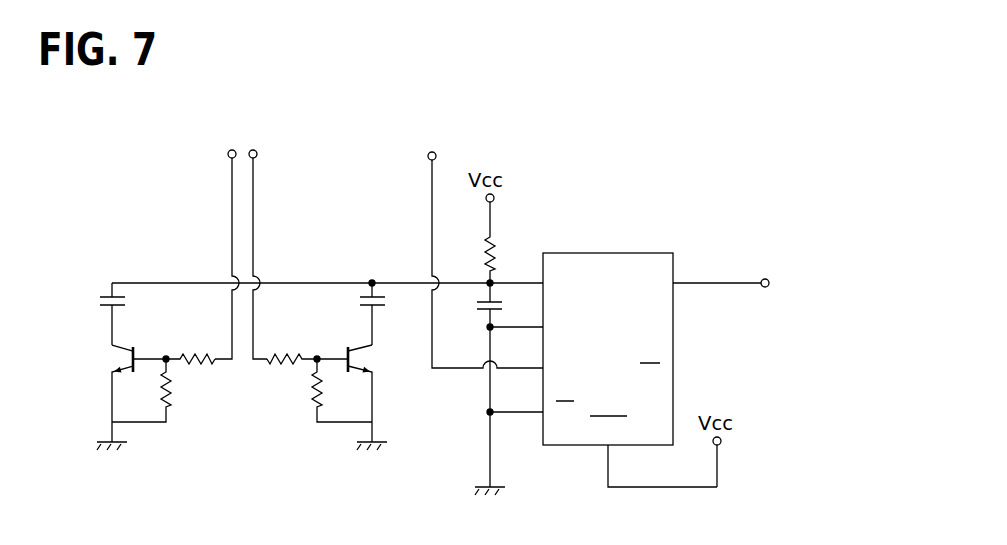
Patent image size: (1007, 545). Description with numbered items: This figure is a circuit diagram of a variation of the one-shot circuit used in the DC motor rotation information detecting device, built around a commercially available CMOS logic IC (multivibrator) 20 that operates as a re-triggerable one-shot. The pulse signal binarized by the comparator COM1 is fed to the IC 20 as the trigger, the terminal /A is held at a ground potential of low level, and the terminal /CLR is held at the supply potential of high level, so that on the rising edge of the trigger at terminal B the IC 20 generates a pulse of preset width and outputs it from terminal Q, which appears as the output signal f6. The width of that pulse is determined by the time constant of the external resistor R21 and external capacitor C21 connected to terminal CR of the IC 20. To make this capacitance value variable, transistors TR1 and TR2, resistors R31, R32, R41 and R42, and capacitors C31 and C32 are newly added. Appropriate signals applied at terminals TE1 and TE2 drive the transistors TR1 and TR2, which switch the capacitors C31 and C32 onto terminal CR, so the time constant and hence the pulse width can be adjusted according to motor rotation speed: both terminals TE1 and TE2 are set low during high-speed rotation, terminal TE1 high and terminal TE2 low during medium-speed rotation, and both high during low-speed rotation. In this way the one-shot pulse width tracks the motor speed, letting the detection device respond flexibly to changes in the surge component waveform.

The terminal TE1 is at (227, 154).
The terminal TE2 is at (257, 154).
The capacitor C31 is at (105, 306).
The capacitor C32 is at (382, 310).
The transistor TR1 is at (134, 348).
The transistor TR2 is at (347, 348).
The resistor R31 is at (171, 406).
The resistor R32 is at (310, 406).
The resistor R41 is at (203, 365).
The resistor R42 is at (279, 365).
The external resistor R21 is at (497, 245).
The external capacitor C21 is at (480, 311).
The CMOS logic IC (multivibrator) 20 is at (607, 253).
The comparator COM1 is at (437, 133).
The output signal f6 is at (783, 283).